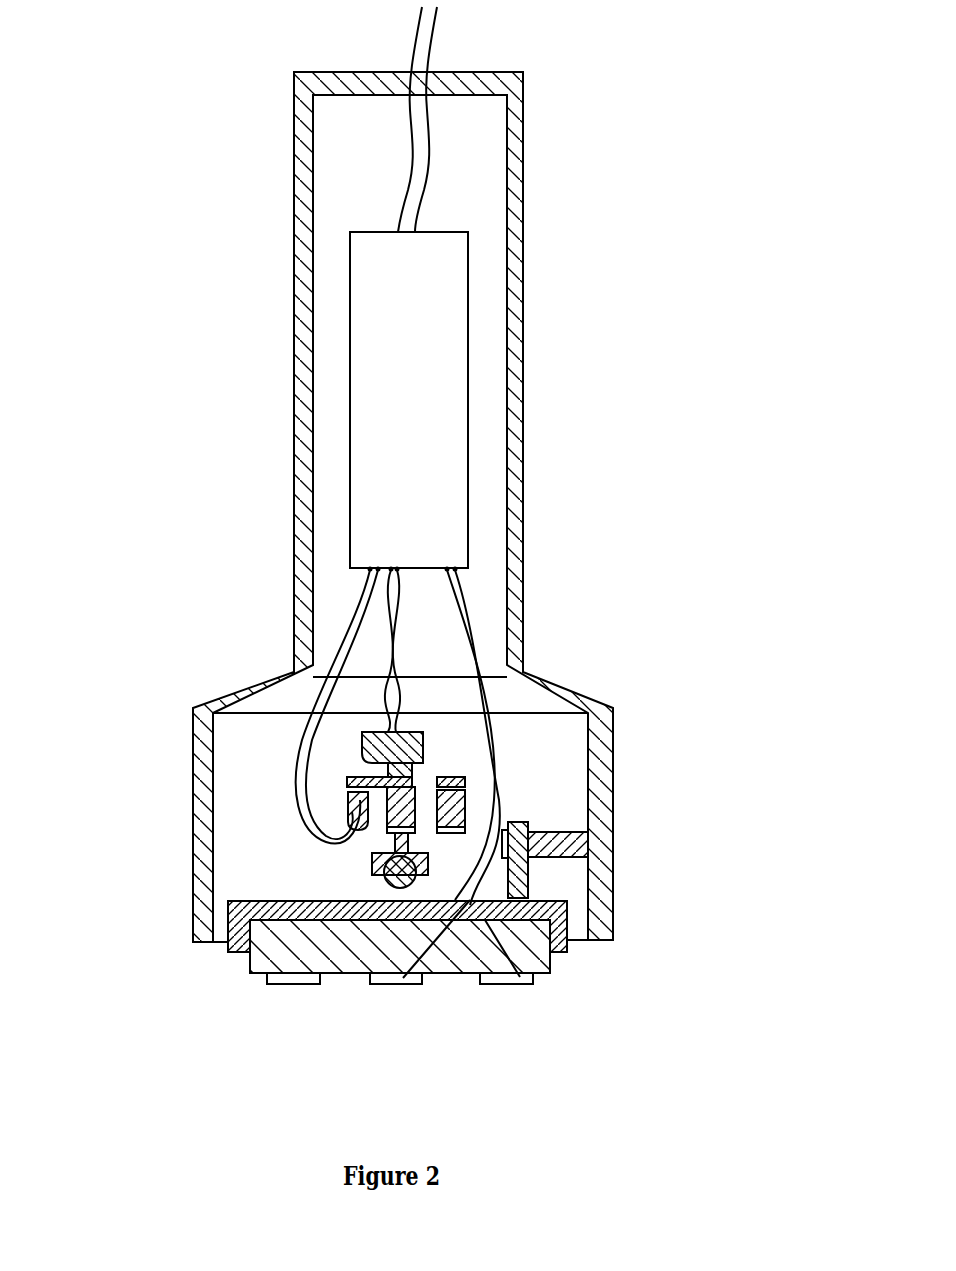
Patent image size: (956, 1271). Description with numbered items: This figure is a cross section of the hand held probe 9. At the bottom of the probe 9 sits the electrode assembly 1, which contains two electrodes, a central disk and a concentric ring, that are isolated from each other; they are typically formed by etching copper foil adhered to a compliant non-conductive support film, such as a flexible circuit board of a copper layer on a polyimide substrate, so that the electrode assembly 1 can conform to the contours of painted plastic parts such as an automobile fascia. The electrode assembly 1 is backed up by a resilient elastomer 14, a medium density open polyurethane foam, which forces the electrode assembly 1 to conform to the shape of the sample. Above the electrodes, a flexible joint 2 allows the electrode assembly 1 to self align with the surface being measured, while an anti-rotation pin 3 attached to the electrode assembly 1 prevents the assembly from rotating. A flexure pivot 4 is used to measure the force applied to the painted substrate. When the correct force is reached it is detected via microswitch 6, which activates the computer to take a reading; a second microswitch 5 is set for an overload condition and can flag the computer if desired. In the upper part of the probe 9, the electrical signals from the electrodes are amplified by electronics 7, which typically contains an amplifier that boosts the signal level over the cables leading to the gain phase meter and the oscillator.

The electrode assembly 1 is at (497, 988).
The flexible joint 2 is at (373, 878).
The anti-rotation pin 3 is at (527, 878).
The flexure pivot 4 is at (470, 823).
The microswitch 5 is at (343, 800).
The microswitch 6 is at (425, 738).
The electronics 7 is at (433, 363).
The hand held probe 9 is at (525, 127).
The resilient elastomer 14 is at (268, 947).